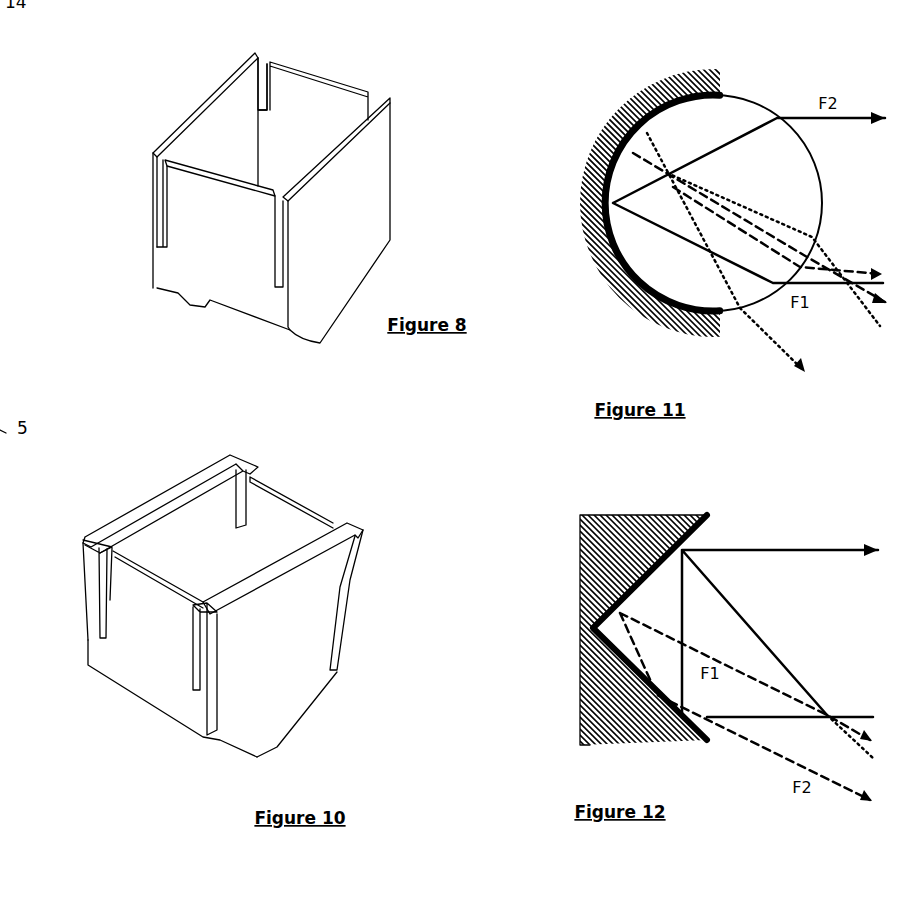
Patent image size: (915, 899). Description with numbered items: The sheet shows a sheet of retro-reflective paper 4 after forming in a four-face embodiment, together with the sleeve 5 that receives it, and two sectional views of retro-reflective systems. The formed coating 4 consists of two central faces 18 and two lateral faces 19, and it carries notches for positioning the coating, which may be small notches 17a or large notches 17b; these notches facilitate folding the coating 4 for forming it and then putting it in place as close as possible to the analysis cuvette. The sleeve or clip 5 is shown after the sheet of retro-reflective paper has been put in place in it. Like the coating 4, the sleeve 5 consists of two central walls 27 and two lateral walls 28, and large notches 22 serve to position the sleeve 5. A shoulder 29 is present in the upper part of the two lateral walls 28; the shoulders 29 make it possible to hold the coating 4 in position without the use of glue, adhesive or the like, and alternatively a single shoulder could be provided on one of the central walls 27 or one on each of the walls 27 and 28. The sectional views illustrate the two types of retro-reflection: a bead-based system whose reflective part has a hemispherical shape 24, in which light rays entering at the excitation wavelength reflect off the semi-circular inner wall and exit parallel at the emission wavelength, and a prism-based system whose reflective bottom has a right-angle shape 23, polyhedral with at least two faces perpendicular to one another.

In FIG. 8, the sheet of retro-reflective paper 4 is at (428, 128).
In FIG. 10, the sheet of retro-reflective paper 4 is at (260, 520).
In FIG. 11, the sheet of retro-reflective paper 4 is at (585, 270).
In FIG. 12, the sheet of retro-reflective paper 4 is at (590, 672).
In FIG. 10, the sleeve 5 is at (303, 507).
In FIG. 8, the small notches 17a is at (268, 90).
In FIG. 8, the large notches 17b is at (270, 250).
In FIG. 8, the central faces 18 is at (305, 107).
In FIG. 8, the lateral faces 19 is at (218, 147).
In FIG. 10, the large notches for positioning the sleeve 22 is at (99, 605).
In FIG. 12, the right-angle shaped bottom 23 is at (590, 618).
In FIG. 11, the hemispherical shaped bottom 24 is at (583, 180).
In FIG. 10, the central walls 27 is at (162, 677).
In FIG. 10, the lateral walls 28 is at (287, 685).
In FIG. 10, the shoulder 29 is at (160, 527).